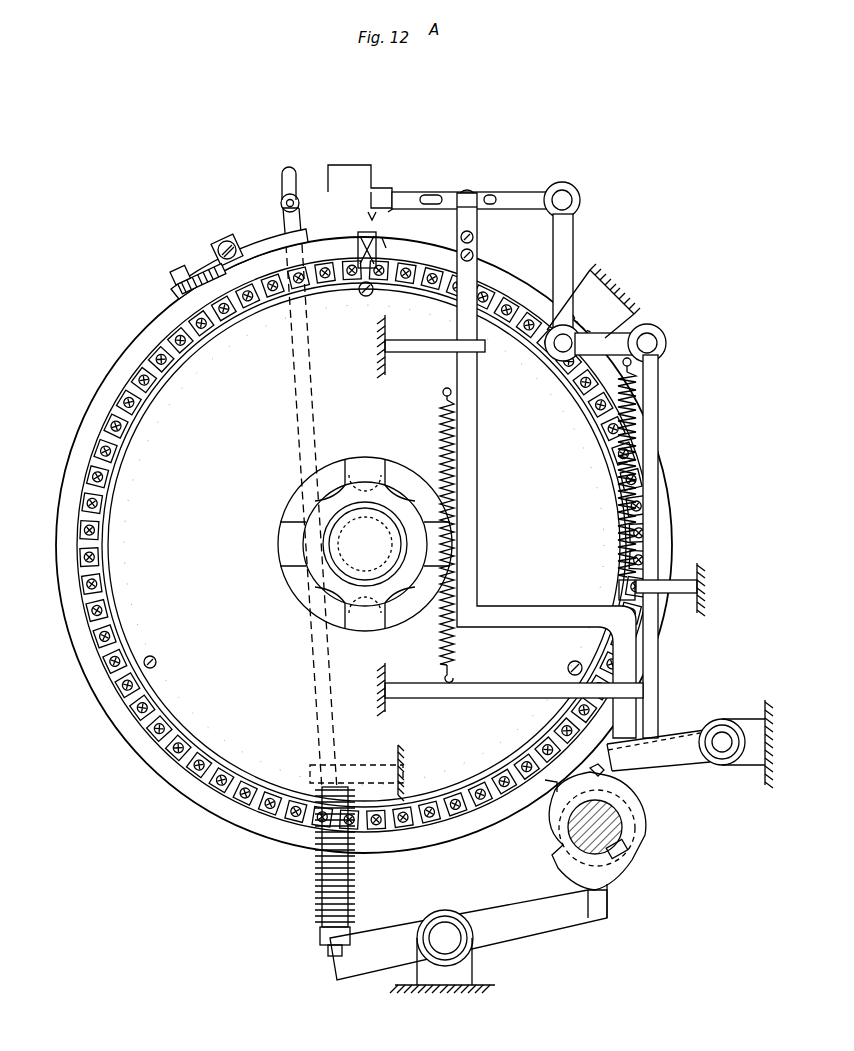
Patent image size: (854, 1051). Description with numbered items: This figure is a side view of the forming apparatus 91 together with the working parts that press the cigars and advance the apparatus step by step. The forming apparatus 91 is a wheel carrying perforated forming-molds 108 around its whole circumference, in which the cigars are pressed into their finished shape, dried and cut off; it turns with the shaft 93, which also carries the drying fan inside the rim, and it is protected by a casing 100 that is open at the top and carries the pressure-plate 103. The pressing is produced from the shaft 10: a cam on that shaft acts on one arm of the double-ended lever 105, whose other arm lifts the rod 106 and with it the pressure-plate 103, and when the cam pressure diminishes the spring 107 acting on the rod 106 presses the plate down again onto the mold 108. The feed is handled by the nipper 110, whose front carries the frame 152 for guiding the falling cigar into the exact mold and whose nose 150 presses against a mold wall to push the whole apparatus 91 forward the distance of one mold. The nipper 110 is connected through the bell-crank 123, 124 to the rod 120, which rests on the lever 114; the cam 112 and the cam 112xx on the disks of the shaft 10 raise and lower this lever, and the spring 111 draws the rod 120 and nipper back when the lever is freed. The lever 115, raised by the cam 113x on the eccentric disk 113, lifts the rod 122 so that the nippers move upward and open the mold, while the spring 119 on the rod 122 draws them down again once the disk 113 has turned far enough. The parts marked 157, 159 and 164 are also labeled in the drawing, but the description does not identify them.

The casing 100 is at (142, 328).
The forming apparatus 91 is at (361, 545).
The shaft 93 is at (365, 544).
The rod 106 is at (292, 171).
The frame 152 is at (344, 167).
The nose 150 is at (356, 212).
The contact slot 164 is at (355, 241).
The lug 157 is at (404, 209).
The lug 159 is at (402, 231).
The forming-mold 108 is at (383, 292).
The pressure-plate 103 is at (248, 246).
The nipper 110 is at (511, 208).
The bell-crank 124 is at (574, 250).
The bell-crank 123 is at (602, 340).
The rod 120 is at (656, 680).
The rod 122 is at (476, 485).
The spring 119 is at (448, 653).
The spring 111 is at (618, 550).
The lever 115 is at (676, 745).
The lever 114 is at (652, 772).
The cam 113x is at (593, 777).
The cam 112xx is at (538, 790).
The shaft 10 is at (613, 834).
The cam 112 is at (550, 841).
The eccentric disk 113 is at (610, 883).
The double-ended lever 105 is at (504, 944).
The spring 107 is at (319, 898).